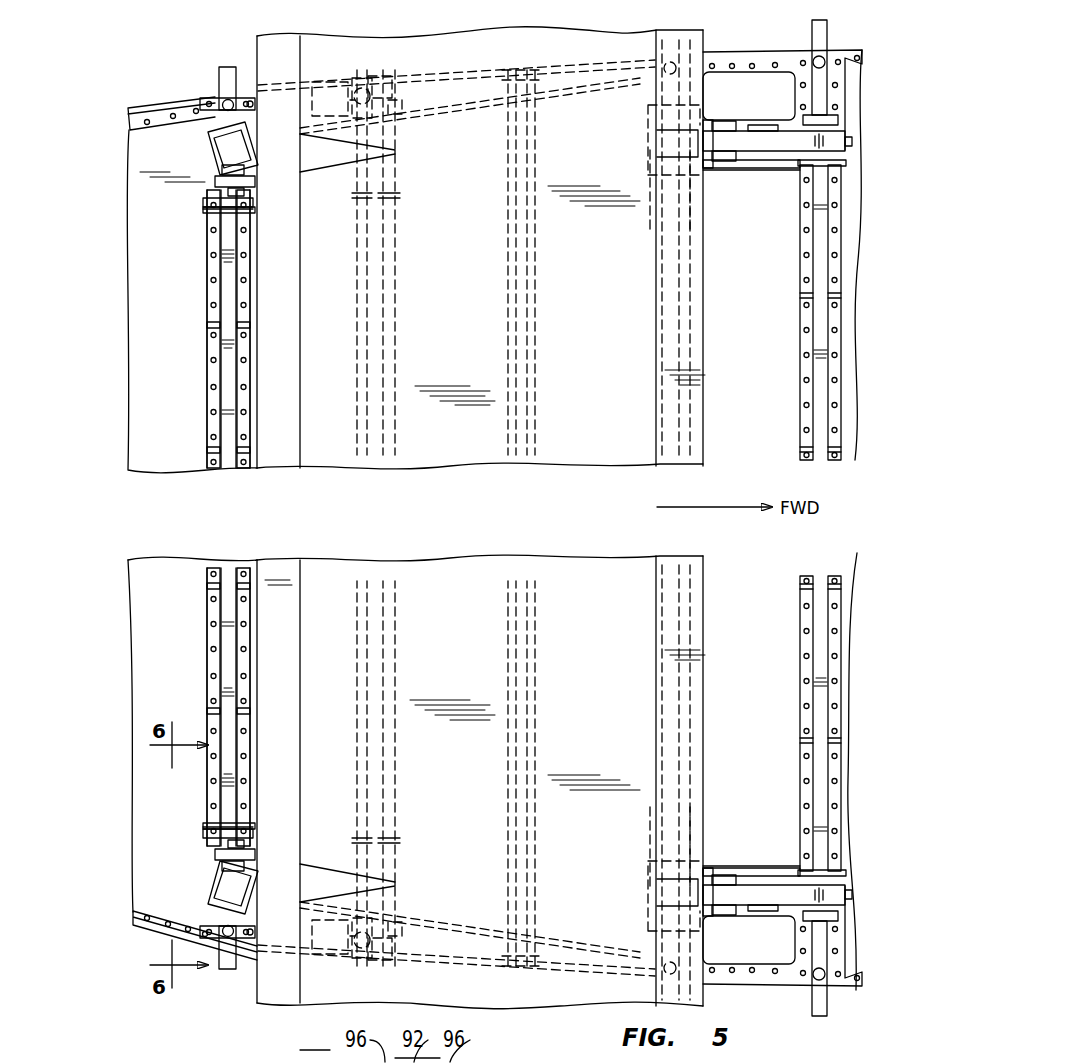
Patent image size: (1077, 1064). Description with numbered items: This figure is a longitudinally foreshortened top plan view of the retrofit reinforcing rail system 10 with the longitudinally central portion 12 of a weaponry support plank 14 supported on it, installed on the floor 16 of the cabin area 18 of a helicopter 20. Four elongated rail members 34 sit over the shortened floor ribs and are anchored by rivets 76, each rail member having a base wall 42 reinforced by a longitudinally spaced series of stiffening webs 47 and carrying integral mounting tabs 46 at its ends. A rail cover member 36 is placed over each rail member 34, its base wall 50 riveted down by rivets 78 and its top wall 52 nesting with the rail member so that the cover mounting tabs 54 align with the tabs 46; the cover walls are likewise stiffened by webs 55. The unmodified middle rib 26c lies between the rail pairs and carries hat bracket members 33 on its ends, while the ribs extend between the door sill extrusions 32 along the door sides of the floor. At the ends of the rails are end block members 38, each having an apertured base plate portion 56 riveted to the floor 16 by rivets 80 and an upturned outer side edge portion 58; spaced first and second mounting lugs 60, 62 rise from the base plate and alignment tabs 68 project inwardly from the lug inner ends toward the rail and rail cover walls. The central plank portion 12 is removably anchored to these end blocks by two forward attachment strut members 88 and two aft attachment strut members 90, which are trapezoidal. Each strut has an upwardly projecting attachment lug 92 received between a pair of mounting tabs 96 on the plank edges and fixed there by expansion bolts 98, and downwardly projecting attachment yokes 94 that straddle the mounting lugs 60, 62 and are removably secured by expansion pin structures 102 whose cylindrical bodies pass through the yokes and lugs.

The retrofit reinforcing rail system 10 is at (198, 356).
The longitudinally central portion 12 is at (705, 332).
The weaponry support plank 14 is at (514, 32).
The cabin area floor 16 is at (762, 408).
The cabin area 18 is at (165, 460).
The helicopter 20 is at (152, 98).
The middle rib 26c is at (536, 300).
The door sill extrusion 32 is at (782, 54).
The hat bracket member 33 is at (540, 152).
The rail member 34 is at (204, 279).
The rail cover member 36 is at (246, 352).
The end block member 38 is at (316, 92).
The base wall 42 is at (205, 258).
The mounting tab 46 is at (204, 209).
The stiffening web 47 is at (210, 326).
The base wall 50 is at (248, 256).
The top wall 52 is at (230, 290).
The mounting tab 54 is at (252, 208).
The stiffening web 55 is at (246, 325).
The base plate portion 56 is at (348, 92).
The upturned outer side edge portion 58 is at (242, 68).
The first mounting lug 60 is at (222, 64).
The second mounting lug 62 is at (384, 86).
The alignment tab 68 is at (392, 218).
The rivet 76 is at (210, 336).
The rivet 78 is at (246, 364).
The rivet 80 is at (212, 100).
The forward attachment strut member 88 is at (766, 160).
The aft attachment strut member 90 is at (396, 165).
The attachment lug 92 is at (250, 188).
The attachment yoke 94 is at (208, 122).
The mounting tab 96 is at (246, 166).
The expansion bolt 98 is at (431, 1053).
The expansion pin structure 102 is at (251, 101).